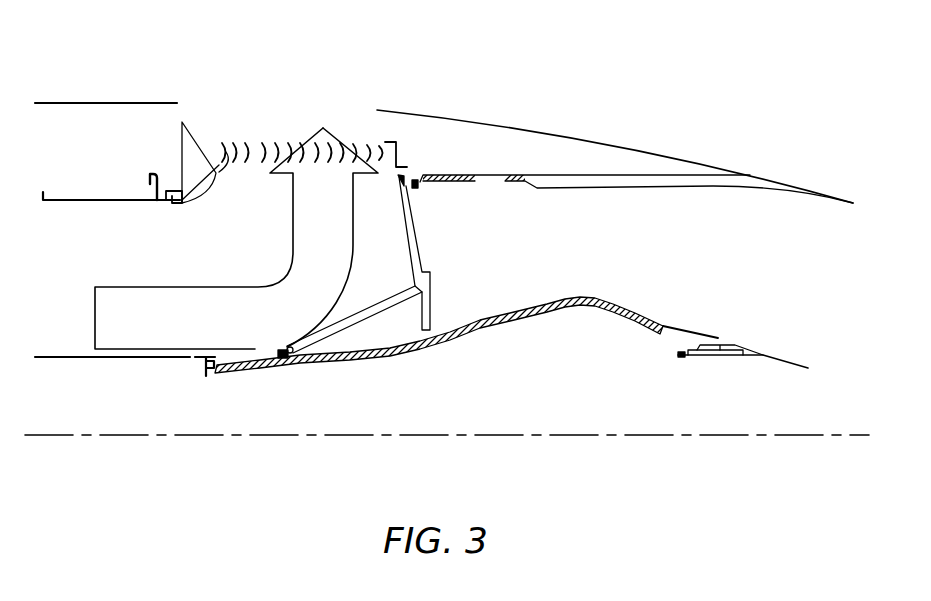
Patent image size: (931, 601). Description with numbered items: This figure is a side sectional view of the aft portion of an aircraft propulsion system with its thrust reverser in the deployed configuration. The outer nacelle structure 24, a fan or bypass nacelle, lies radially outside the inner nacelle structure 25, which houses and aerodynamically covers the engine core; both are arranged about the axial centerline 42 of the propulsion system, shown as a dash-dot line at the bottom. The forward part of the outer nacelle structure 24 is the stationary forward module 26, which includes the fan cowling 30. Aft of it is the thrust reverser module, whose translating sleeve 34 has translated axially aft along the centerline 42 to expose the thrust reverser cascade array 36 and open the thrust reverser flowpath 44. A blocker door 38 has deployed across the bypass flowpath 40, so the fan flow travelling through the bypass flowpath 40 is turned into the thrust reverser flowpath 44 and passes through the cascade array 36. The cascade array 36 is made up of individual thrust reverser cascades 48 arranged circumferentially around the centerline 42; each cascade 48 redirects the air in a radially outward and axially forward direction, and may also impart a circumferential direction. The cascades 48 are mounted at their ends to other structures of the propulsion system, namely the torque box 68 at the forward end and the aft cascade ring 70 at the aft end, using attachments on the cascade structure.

The outer nacelle structure 24 is at (687, 118).
The inner nacelle structure 25 is at (668, 316).
The stationary forward module 26 is at (65, 96).
The fan cowling 30 is at (103, 102).
The translating sleeve 34 is at (559, 130).
The thrust reverser cascade array 36 is at (363, 141).
The blocker door 38 is at (417, 233).
The bypass flowpath 40 is at (114, 265).
The axial centerline 42 is at (840, 440).
The thrust reverser flowpath 44 is at (256, 134).
The thrust reverser cascade 48 is at (240, 167).
The torque box 68 is at (200, 147).
The aft cascade ring 70 is at (407, 158).